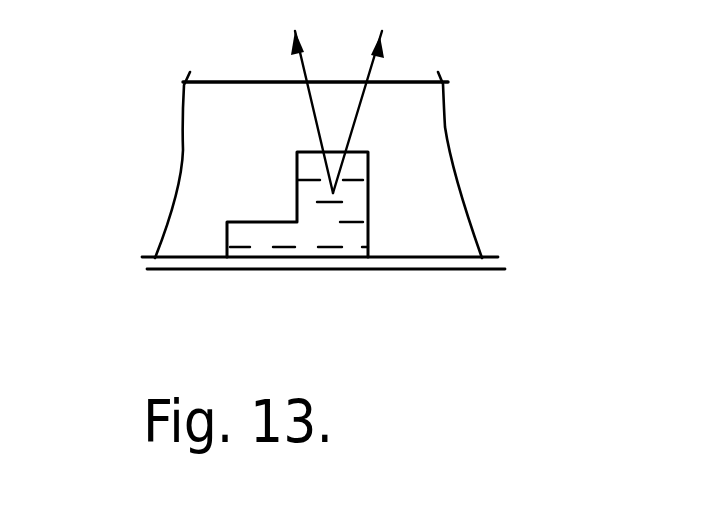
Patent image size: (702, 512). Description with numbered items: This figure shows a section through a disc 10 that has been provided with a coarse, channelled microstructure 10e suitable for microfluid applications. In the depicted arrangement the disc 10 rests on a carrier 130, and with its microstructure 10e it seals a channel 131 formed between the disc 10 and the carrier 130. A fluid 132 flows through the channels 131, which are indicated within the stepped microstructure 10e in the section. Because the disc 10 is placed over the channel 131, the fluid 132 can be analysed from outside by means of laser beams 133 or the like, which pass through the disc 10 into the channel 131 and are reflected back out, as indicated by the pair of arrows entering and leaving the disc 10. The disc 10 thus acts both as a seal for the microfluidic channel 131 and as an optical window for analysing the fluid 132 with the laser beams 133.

The disc 10 is at (212, 150).
The coarse, channelled microstructure 10e is at (368, 167).
The carrier 130 is at (157, 258).
The channel 131 is at (353, 208).
The fluid 132 is at (353, 237).
The laser beams 133 is at (298, 62).